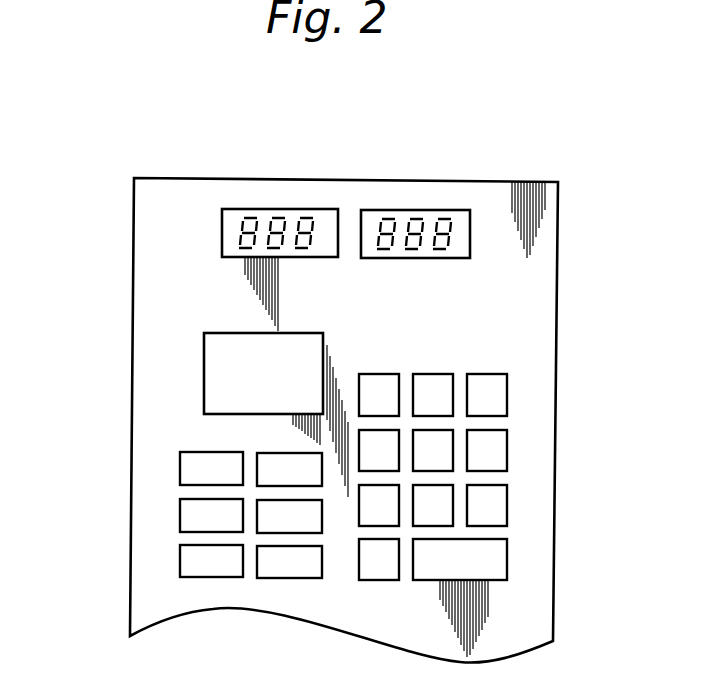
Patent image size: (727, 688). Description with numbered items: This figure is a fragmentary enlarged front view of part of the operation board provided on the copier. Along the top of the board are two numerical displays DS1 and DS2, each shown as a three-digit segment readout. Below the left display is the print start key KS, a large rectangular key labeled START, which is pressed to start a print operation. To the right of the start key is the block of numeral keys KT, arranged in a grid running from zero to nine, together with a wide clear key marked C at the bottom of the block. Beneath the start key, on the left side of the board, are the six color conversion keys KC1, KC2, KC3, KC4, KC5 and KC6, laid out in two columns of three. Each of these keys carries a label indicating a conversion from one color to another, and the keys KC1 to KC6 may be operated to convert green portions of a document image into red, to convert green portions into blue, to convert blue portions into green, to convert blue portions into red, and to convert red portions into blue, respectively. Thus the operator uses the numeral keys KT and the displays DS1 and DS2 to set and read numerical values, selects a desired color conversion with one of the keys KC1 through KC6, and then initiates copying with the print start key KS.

The numerical display DS1 is at (268, 209).
The numerical display DS2 is at (410, 210).
The print start key KS is at (223, 333).
The color conversion key KC1 is at (283, 453).
The color conversion key KC2 is at (180, 470).
The color conversion key KC3 is at (180, 517).
The color conversion key KC4 is at (280, 533).
The color conversion key KC5 is at (218, 578).
The color conversion key KC6 is at (298, 578).
The numeral keys KT is at (520, 443).